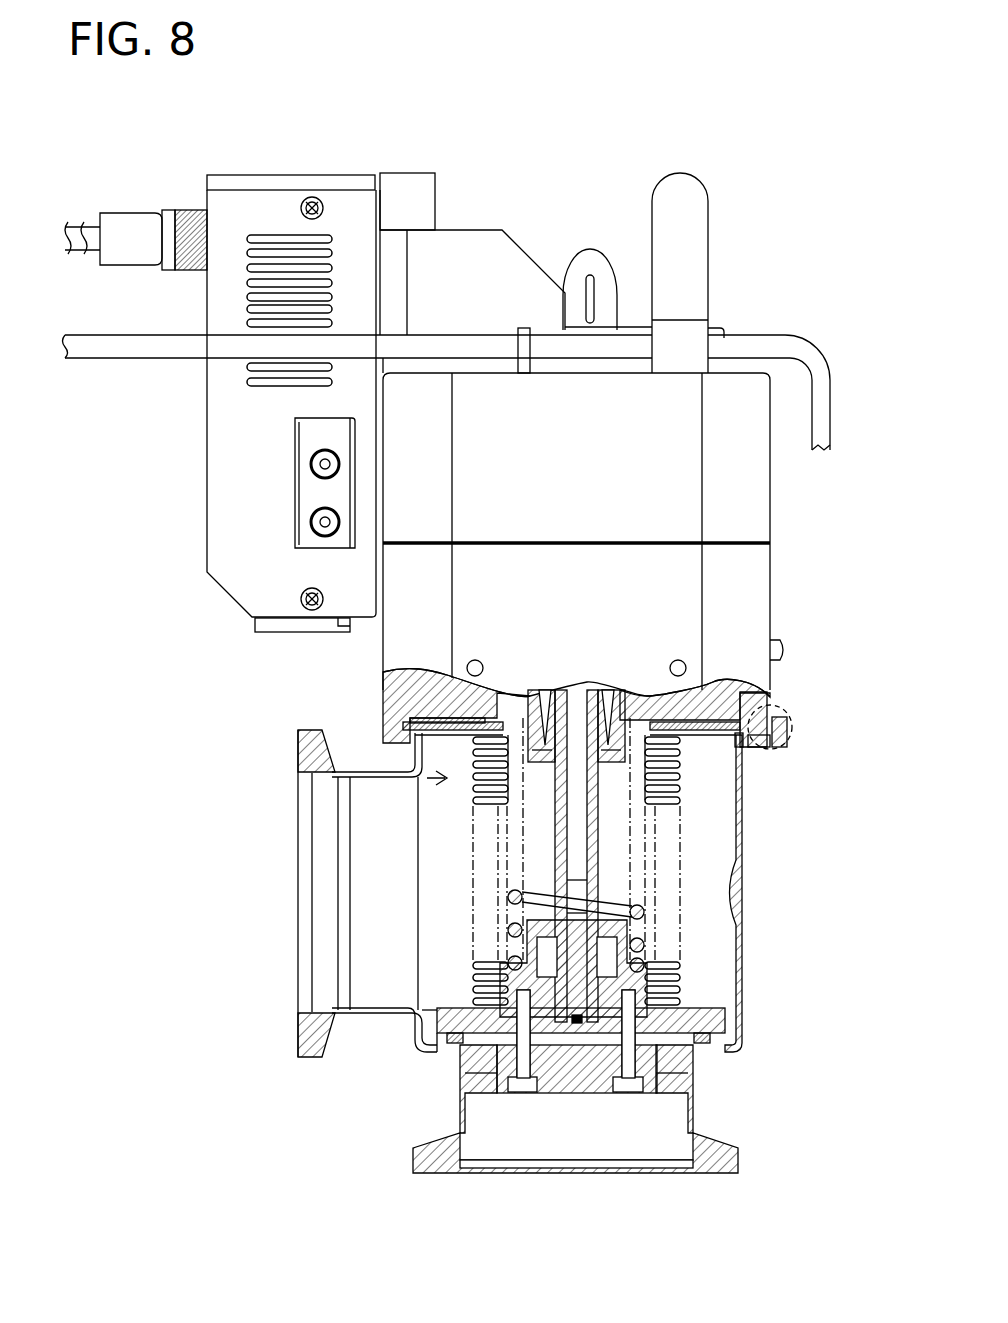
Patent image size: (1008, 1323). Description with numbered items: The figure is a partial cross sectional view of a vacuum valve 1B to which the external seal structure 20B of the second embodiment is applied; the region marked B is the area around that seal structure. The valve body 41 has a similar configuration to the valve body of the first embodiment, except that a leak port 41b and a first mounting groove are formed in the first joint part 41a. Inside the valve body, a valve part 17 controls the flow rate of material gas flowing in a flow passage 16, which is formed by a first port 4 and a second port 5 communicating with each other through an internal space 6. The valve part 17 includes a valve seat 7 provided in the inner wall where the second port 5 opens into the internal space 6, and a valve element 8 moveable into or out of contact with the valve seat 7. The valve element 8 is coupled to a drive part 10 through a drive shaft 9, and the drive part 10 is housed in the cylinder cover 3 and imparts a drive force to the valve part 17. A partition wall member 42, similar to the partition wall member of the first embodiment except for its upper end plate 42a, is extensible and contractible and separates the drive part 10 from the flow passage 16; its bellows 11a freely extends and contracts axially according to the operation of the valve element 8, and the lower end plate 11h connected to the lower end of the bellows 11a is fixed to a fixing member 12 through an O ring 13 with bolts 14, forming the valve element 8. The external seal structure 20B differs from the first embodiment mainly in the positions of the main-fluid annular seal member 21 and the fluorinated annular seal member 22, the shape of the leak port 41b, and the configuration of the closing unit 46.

The vacuum valve 1B is at (790, 162).
The cylinder cover 3 is at (772, 562).
The first port 4 is at (298, 900).
The second port 5 is at (575, 1175).
The internal space 6 is at (440, 858).
The valve seat 7 is at (437, 1052).
The valve element 8 is at (812, 1050).
The drive shaft 9 is at (605, 865).
The drive part 10 is at (437, 677).
The bellows 11a is at (647, 977).
The lower end plate 11h is at (720, 1033).
The fixing member 12 is at (640, 1082).
The O ring 13 is at (700, 1057).
The bolts 14 is at (693, 1062).
The flow passage 16 is at (430, 778).
The valve part 17 is at (425, 998).
The external seal structure 20B is at (790, 717).
The main-fluid annular seal member 21 is at (728, 740).
The fluorinated annular seal member 22 is at (777, 700).
The valve body 41 is at (737, 993).
The first joint part 41a is at (747, 747).
The leak port 41b is at (767, 747).
The partition wall member 42 is at (693, 950).
The upper end plate 42a is at (707, 687).
The closing unit 46 is at (787, 733).
The region B is at (777, 763).